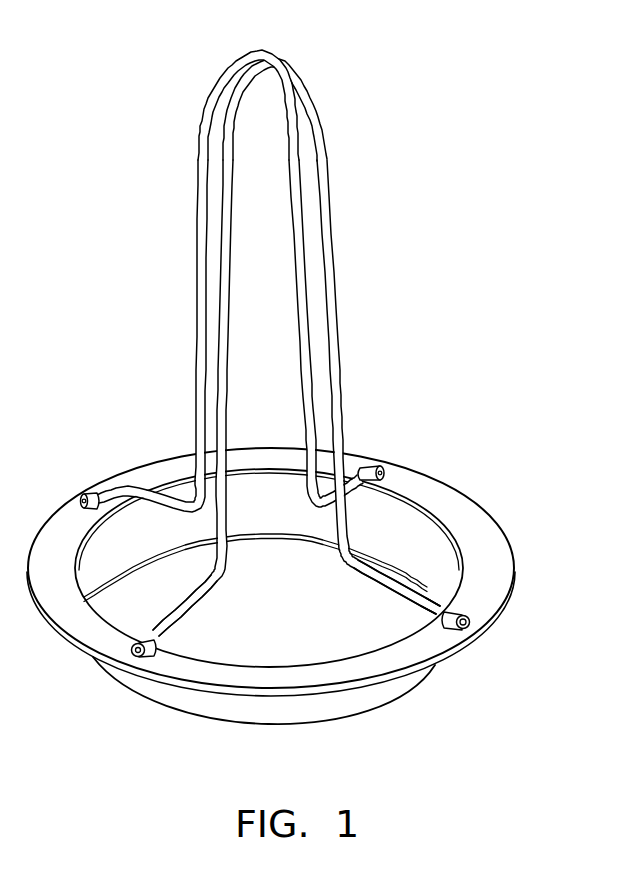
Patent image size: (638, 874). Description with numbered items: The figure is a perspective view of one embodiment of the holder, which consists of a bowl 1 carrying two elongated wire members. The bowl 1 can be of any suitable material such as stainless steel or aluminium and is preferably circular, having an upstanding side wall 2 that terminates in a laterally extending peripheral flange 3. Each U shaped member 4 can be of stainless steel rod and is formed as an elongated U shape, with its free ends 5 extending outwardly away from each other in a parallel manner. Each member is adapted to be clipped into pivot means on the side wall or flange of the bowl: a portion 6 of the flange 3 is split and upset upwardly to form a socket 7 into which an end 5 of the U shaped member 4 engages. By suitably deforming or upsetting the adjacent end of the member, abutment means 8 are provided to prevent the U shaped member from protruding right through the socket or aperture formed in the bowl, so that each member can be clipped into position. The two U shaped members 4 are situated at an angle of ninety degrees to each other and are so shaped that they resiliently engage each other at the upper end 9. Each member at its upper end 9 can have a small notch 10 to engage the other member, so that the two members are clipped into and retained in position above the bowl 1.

The bowl 1 is at (428, 687).
The side wall 2 is at (348, 707).
The peripheral flange 3 is at (493, 558).
The U shaped member 4 is at (230, 337).
The free ends 5 is at (207, 593).
The portion of the flange 6 is at (460, 613).
The socket 7 is at (462, 629).
The abutment means 8 is at (437, 608).
The upper end 9 is at (288, 71).
The notch 10 is at (265, 52).